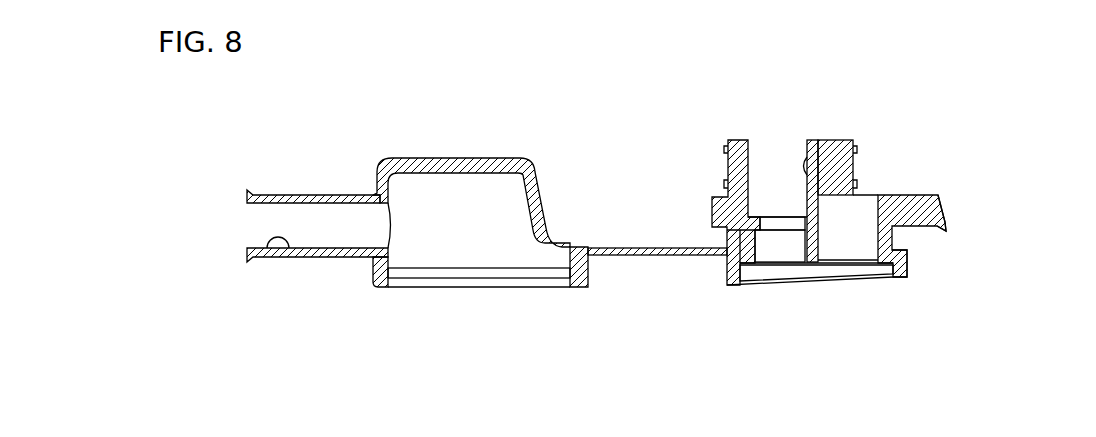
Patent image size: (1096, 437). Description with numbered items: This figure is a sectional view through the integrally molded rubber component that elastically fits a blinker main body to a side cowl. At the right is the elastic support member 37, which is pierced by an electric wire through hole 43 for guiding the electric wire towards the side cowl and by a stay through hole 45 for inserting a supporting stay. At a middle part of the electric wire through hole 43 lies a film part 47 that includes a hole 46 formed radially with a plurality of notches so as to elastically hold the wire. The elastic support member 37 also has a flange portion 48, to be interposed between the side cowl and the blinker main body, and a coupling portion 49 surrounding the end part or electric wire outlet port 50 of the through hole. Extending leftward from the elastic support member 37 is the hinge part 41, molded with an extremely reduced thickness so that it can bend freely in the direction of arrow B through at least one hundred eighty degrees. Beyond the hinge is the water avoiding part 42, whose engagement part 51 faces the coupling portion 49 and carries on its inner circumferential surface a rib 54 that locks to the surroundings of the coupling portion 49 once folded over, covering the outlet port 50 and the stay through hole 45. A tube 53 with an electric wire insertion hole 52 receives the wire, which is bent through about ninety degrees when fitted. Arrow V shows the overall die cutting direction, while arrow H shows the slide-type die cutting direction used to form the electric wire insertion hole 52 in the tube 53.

The elastic support member 37 is at (903, 186).
The hinge part 41 is at (648, 258).
The water avoiding part 42 is at (432, 164).
The electric wire through hole 43 is at (751, 158).
The stay through hole 45 is at (822, 183).
The hole 46 is at (782, 217).
The film part 47 is at (758, 233).
The flange portion 48 is at (927, 220).
The coupling portion 49 is at (908, 266).
The end part (electric wire outlet port) 50 is at (747, 286).
The engagement part 51 is at (227, 327).
The electric wire insertion hole 52 is at (268, 257).
The tube 53 is at (305, 257).
The rib 54 is at (438, 283).
The arrow H is at (177, 226).
The arrow V is at (643, 75).
The arrow B is at (578, 317).